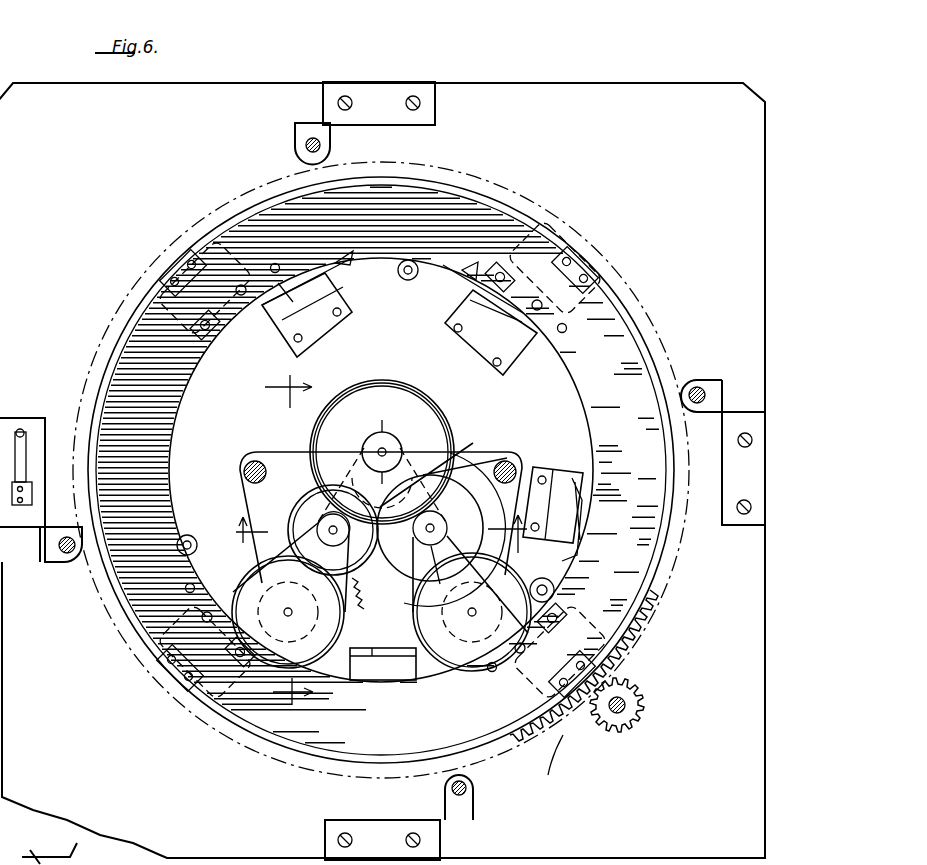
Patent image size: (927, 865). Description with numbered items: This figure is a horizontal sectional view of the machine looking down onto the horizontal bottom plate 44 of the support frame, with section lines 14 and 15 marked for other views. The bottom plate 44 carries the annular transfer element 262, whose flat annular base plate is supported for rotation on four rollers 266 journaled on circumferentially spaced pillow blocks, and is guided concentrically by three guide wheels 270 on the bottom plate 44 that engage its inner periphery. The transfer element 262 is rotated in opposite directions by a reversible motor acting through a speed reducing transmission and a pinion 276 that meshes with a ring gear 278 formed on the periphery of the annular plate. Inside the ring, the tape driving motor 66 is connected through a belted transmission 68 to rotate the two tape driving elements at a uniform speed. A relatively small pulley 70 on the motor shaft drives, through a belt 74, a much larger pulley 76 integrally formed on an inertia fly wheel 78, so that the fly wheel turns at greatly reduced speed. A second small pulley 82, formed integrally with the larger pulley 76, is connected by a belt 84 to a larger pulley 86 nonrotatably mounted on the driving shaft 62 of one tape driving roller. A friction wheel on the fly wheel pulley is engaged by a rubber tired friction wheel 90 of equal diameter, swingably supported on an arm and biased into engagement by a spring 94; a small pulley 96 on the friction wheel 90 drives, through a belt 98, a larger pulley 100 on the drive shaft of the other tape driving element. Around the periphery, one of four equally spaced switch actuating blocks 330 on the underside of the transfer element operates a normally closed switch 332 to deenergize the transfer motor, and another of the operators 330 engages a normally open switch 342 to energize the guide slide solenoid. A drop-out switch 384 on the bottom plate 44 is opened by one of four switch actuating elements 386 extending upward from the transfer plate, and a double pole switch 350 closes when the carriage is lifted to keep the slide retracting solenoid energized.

The bottom plate 44 is at (616, 792).
The double pole switch 350 is at (22, 430).
The annular transfer element 262 is at (645, 631).
The pinion 276 is at (645, 712).
The ring gear 278 is at (541, 772).
The tape driving motor 66 is at (410, 383).
The small pulley 70 is at (382, 460).
The belt 98 is at (318, 522).
The belt 74 is at (465, 450).
The belted transmission 68 is at (473, 437).
The larger pulley 100 is at (278, 664).
The driving shaft 62 is at (447, 657).
The second small pulley 82 is at (443, 574).
The larger pulley 86 is at (466, 660).
The belt 84 is at (383, 664).
The spring 94 is at (348, 645).
The rubber tired friction wheel 90 is at (330, 500).
The small pulley 96 is at (338, 508).
The larger pulley 76 is at (570, 488).
The inertia fly wheel 78 is at (522, 458).
The drop-out switch 384 is at (585, 481).
The normally open switch 342 is at (307, 306).
The normally closed switch 332 is at (513, 350).
The switch actuating blocks 330 is at (203, 331).
The switch actuating elements 386 is at (276, 263).
The rollers 266 is at (213, 242).
The guide wheels 270 is at (409, 281).
The section line 14 is at (302, 378).
The section line 15 is at (375, 538).